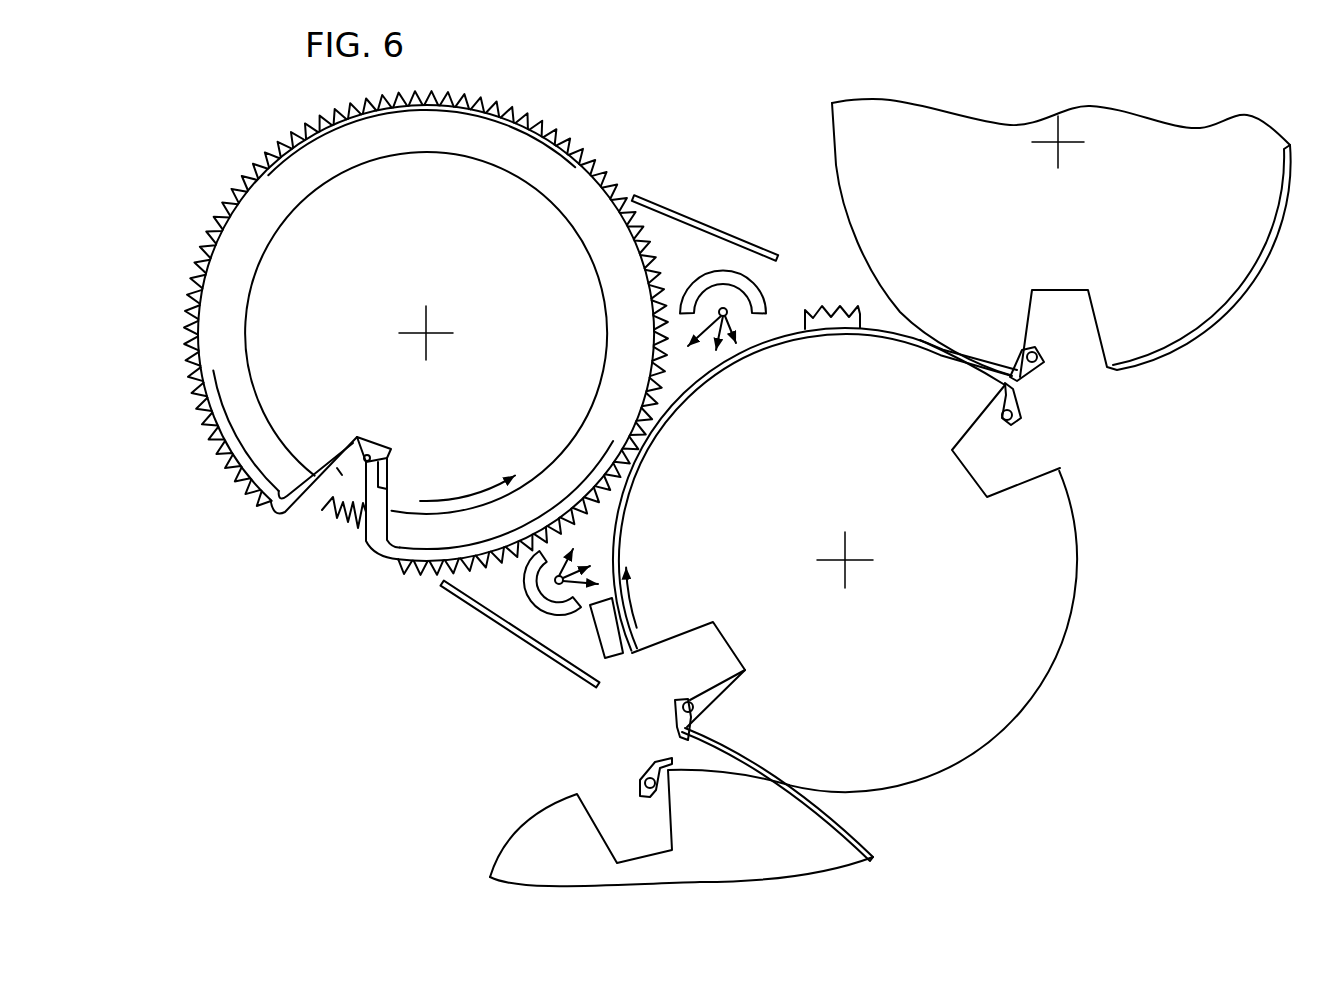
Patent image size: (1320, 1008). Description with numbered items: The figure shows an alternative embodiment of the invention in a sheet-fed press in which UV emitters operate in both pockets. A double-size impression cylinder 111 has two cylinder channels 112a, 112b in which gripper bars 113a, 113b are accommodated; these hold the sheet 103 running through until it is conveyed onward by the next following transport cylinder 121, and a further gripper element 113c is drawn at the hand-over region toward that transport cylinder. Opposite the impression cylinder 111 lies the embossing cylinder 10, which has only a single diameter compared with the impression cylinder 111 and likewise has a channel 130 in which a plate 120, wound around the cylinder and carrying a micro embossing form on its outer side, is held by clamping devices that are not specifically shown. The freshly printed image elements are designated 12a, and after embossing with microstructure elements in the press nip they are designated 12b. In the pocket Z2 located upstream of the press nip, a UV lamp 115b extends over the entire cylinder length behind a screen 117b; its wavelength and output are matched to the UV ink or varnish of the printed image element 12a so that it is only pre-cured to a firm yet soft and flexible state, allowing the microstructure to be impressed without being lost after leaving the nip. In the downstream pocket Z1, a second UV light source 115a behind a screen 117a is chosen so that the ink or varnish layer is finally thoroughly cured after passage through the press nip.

The embossing cylinder 10 is at (287, 420).
The plate 120 is at (267, 186).
The channel 130 is at (372, 442).
The screen 117a is at (652, 203).
The pocket Z1 is at (678, 250).
The second UV light source 115a is at (708, 272).
The double-size impression cylinder 111 is at (1042, 638).
The printed image element 12b is at (812, 318).
The sheet 103 is at (893, 330).
The transport cylinder 121 is at (1108, 227).
The third hinge 113c is at (1040, 368).
The gripper bar 113a is at (1003, 422).
The cylinder channel 112a is at (988, 493).
The cylinder channel 112b is at (698, 658).
The gripper bar 113b is at (747, 668).
The pocket Z2 is at (585, 523).
The UV lamp 115b is at (540, 593).
The screen 117b is at (465, 598).
The printed image element 12a is at (617, 658).